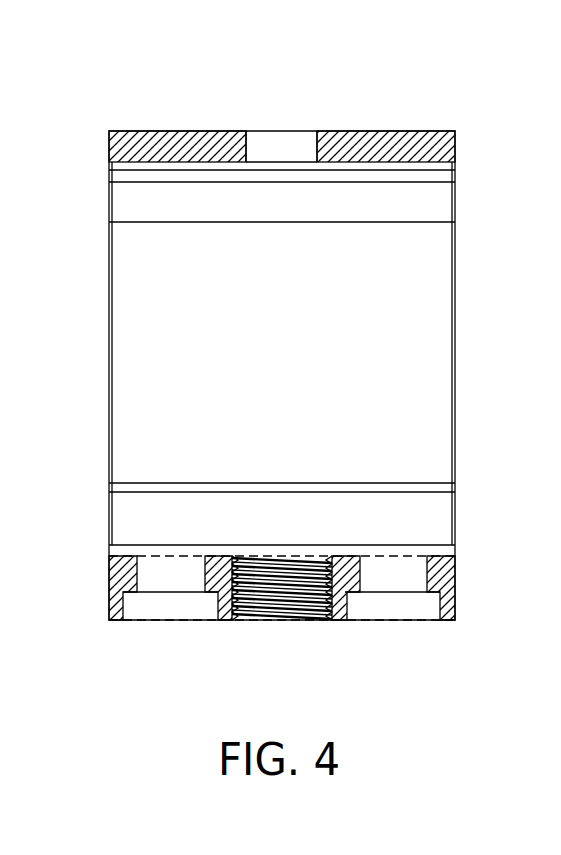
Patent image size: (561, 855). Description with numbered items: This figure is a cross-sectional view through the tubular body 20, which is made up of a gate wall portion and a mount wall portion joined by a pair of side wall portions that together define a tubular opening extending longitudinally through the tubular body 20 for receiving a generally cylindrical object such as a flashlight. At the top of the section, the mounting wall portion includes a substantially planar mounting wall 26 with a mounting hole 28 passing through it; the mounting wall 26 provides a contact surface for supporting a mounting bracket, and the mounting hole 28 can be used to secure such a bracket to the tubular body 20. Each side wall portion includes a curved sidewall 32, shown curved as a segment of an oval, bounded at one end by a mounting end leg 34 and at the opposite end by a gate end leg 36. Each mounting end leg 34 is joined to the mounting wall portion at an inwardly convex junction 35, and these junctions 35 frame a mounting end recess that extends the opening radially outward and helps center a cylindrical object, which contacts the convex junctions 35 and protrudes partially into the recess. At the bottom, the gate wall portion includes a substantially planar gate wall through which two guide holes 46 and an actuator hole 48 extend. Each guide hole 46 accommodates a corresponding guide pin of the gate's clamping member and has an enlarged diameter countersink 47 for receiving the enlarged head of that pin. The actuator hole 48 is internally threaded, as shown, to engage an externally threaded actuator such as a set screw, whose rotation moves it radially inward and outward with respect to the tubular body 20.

The tubular body 20 is at (398, 90).
The mounting wall 26 is at (435, 131).
The mounting hole 28 is at (278, 147).
The curved sidewall 32 is at (433, 312).
The mounting end leg 34 is at (433, 193).
The inwardly convex junction 35 is at (420, 222).
The gate end leg 36 is at (442, 523).
The guide hole 46 is at (158, 572).
The enlarged diameter countersink 47 is at (162, 608).
The actuator hole 48 is at (287, 608).